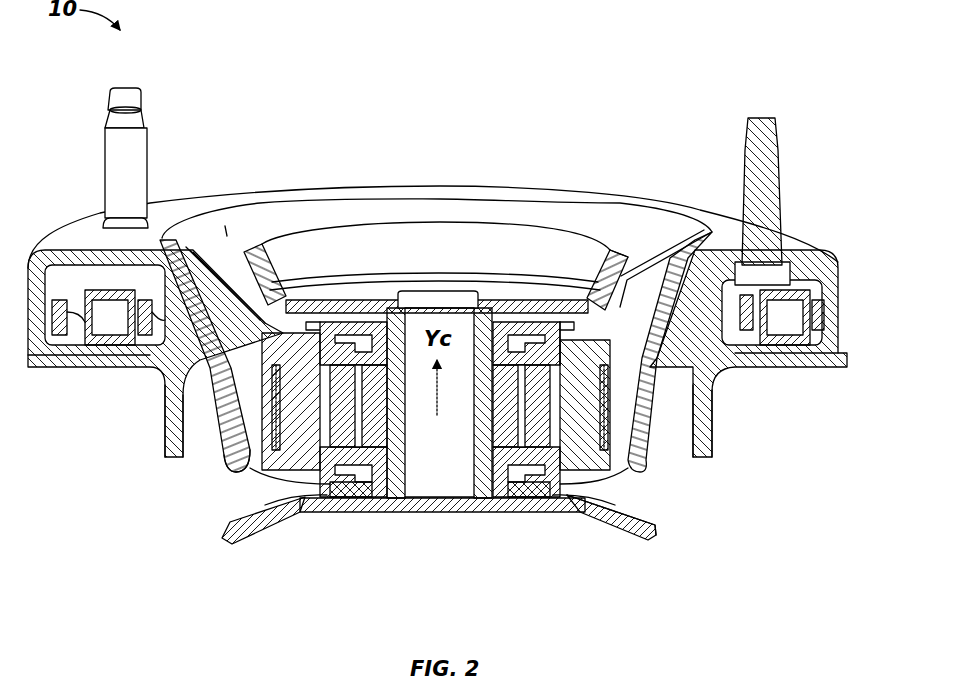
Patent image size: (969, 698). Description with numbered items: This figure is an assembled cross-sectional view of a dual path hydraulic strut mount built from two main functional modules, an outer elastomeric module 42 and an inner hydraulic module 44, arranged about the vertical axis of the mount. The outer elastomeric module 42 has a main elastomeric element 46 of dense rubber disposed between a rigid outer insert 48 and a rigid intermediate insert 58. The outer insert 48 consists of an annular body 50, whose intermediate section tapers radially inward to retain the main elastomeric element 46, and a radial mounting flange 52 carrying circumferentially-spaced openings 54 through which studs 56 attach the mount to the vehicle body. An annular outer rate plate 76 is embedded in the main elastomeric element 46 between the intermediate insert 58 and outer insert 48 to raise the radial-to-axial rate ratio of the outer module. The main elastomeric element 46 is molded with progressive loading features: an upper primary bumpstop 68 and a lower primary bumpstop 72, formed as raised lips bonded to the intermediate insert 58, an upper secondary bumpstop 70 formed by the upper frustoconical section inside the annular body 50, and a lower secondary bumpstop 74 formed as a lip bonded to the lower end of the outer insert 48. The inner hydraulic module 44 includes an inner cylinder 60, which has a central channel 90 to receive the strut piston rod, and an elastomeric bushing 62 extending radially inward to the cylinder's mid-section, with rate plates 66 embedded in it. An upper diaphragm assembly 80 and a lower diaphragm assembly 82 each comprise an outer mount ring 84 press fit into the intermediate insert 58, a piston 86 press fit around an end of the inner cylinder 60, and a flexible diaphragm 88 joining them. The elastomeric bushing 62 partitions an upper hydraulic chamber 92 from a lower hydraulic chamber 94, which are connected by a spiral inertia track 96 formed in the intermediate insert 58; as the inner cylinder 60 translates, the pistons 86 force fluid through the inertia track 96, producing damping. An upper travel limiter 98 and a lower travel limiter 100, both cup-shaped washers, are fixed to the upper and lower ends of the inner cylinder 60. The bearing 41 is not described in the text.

The bearing 41 is at (100, 353).
The outer elastomeric module 42 is at (227, 236).
The inner hydraulic module 44 is at (212, 232).
The main elastomeric element 46 is at (630, 232).
The outer insert 48 is at (826, 265).
The annular body 50 is at (730, 367).
The radial mounting flange 52 is at (82, 228).
The openings 54 is at (790, 265).
The studs 56 is at (113, 152).
The intermediate insert 58 is at (180, 427).
The inner cylinder 60 is at (484, 490).
The elastomeric bushing 62 is at (545, 455).
The rate plates 66 is at (390, 408).
The upper primary bumpstop 68 is at (561, 315).
The upper secondary bumpstop 70 is at (278, 252).
The lower primary bumpstop 72 is at (313, 484).
The lower secondary bumpstop 74 is at (230, 467).
The outer rate plate 76 is at (714, 416).
The upper diaphragm assembly 80 is at (496, 320).
The lower diaphragm assembly 82 is at (348, 482).
The outer mount ring 84 is at (598, 348).
The piston 86 is at (380, 325).
The diaphragm 88 is at (346, 322).
The central channel 90 is at (439, 477).
The upper hydraulic chamber 92 is at (330, 322).
The lower hydraulic chamber 94 is at (224, 527).
The inertia track 96 is at (305, 477).
The upper travel limiter 98 is at (447, 236).
The lower travel limiter 100 is at (650, 530).